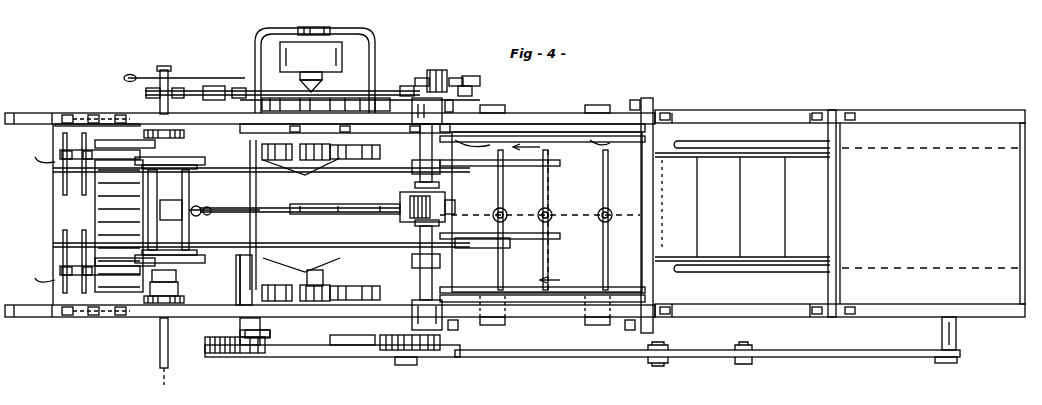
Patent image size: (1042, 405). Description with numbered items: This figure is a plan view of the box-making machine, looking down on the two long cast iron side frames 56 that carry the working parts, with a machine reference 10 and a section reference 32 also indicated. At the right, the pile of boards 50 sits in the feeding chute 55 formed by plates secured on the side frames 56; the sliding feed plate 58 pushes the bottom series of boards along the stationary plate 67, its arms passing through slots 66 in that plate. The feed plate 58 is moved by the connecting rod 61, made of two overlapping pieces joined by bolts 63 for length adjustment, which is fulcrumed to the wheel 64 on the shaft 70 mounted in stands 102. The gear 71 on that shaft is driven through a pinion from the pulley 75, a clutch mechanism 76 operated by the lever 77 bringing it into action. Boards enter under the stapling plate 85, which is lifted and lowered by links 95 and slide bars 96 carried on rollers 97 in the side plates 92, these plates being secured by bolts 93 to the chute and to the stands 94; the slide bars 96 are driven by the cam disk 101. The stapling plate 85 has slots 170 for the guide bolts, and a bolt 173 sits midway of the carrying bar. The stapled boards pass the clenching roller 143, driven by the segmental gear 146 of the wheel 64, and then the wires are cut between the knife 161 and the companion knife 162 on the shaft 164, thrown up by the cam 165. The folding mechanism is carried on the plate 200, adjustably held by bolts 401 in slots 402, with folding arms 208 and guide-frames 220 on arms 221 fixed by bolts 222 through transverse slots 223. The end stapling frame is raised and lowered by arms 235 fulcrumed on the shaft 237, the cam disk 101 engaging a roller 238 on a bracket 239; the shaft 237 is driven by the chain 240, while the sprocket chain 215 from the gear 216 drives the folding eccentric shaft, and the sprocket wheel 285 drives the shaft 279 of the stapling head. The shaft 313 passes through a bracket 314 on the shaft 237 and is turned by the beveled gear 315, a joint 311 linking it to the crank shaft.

The direction arrow / machine 10 is at (536, 211).
The drive shaft 32 is at (164, 334).
The boards 50 is at (742, 207).
The feeding chute 55 is at (653, 325).
The side frames 56 is at (30, 118).
The sliding feed plate 58 is at (930, 208).
The connecting rod 61 is at (843, 350).
The bolts 63 is at (752, 350).
The wheel 64 is at (308, 357).
The slots 66 is at (749, 148).
The stationary plate 67 is at (782, 123).
The shaft 70 is at (318, 238).
The gear 71 is at (362, 98).
The pulley 75 is at (315, 70).
The clutch mechanism 76 is at (318, 88).
The lever 77 is at (138, 78).
The stapling plate 85 is at (568, 220).
The plates 92 is at (538, 124).
The bolts 93 is at (452, 104).
The stands 94 is at (432, 112).
The links 95 is at (492, 143).
The slide bars 96 is at (508, 124).
The rollers 97 is at (493, 105).
The cam disk 101 is at (375, 150).
The stands 102 is at (300, 320).
The roller 143 is at (412, 162).
The segmental gear 146 is at (240, 334).
The knife 161 is at (240, 290).
The companion knife 162 is at (246, 268).
The shaft 164 is at (245, 353).
The cam 165 is at (345, 350).
The slots 170 is at (606, 178).
The bolt 173 is at (500, 208).
The plate 200 is at (94, 117).
The folding arms 208 is at (108, 203).
The sprocket chain 215 is at (190, 90).
The gear 216 is at (462, 100).
The guide-frames 220 is at (198, 158).
The arms 221 is at (124, 150).
The bolts 222 is at (60, 154).
The slots 223 is at (80, 172).
The arms 235 is at (488, 166).
The shaft 237 is at (462, 262).
The roller 238 is at (326, 152).
The bracket 239 is at (290, 163).
The chain 240 is at (450, 78).
The shaft 279 is at (168, 78).
The sprocket wheel 285 is at (186, 134).
The lever 311 is at (204, 208).
The shaft 313 is at (278, 206).
The bracket 314 is at (405, 194).
The beveled gear 315 is at (400, 204).
The bolts 401 is at (58, 124).
The slots 402 is at (60, 113).